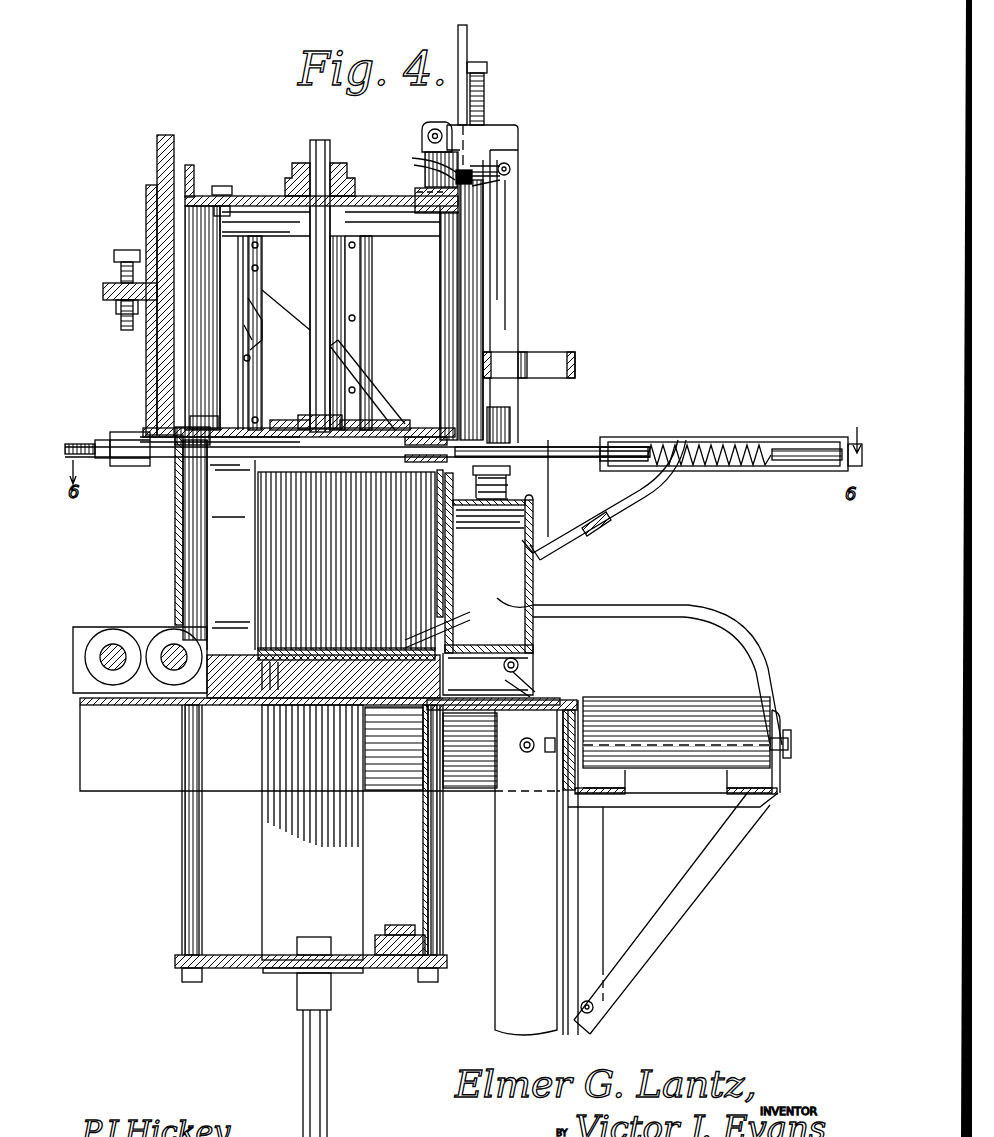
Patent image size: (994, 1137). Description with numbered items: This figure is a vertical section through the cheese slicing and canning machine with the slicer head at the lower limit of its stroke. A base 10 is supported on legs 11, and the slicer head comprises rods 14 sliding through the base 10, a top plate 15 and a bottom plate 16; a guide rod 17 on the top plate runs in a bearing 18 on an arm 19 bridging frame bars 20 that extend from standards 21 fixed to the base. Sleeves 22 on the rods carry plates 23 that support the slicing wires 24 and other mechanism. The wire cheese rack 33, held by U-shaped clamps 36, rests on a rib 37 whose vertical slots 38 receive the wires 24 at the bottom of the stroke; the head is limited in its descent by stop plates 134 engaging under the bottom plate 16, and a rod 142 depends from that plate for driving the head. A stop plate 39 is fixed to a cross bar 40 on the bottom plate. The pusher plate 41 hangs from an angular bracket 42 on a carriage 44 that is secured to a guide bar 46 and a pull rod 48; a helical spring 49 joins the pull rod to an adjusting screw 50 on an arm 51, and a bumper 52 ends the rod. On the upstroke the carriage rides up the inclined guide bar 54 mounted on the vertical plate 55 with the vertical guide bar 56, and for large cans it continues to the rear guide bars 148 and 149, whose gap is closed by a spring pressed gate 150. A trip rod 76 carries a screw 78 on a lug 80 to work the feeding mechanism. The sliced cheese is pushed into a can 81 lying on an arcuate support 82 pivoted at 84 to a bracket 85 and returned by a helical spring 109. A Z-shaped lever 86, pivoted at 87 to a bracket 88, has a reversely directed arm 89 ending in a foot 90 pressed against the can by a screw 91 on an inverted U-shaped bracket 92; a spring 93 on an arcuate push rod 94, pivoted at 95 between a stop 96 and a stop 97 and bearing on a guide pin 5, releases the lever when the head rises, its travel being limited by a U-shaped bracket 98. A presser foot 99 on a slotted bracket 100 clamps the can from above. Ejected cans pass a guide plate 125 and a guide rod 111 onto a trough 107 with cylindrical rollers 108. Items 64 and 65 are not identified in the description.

The guide pin 5 is at (411, 141).
The base 10 is at (110, 706).
The legs 11 is at (500, 995).
The rods 14 is at (186, 826).
The top plate 15 is at (227, 428).
The bottom plate 16 is at (236, 955).
The guide rod 17 is at (321, 140).
The bearing 18 is at (305, 170).
The arm 19 is at (256, 196).
The frame bars 20 is at (195, 180).
The standards 21 is at (195, 248).
The sleeves 22 is at (200, 573).
The plates 23 is at (178, 543).
The slicing wires 24 is at (425, 640).
The wire cheese rack 33 is at (262, 550).
The U-shaped clamps 36 is at (248, 462).
The rib 37 is at (222, 688).
The vertical slots 38 is at (265, 655).
The stop plate 39 is at (423, 822).
The cross bar 40 is at (385, 958).
The pusher plate 41 is at (453, 560).
The angular bracket 42 is at (422, 446).
The carriage 44 is at (386, 438).
The guide bar 46 is at (200, 455).
The pull rod 48 is at (82, 440).
The helical spring 49 is at (722, 442).
The adjusting screw 50 is at (818, 462).
The arm 51 is at (810, 440).
The bumper 52 is at (127, 434).
The inclined guide bar 54 is at (374, 392).
The vertical plate 55 is at (388, 262).
The vertically disposed guide bar 56 is at (348, 300).
The block 64 is at (80, 640).
The rollers 65 is at (168, 645).
The trip rod 76 is at (157, 358).
The screw 78 is at (121, 266).
The lug 80 is at (115, 312).
The can 81 is at (505, 602).
The arcuate support 82 is at (480, 653).
The pivot 84 is at (520, 665).
The bracket 85 is at (540, 705).
The Z-shaped lever 86 is at (512, 304).
The pivot 87 is at (430, 132).
The bracket 88 is at (436, 152).
The reversely directed arm 89 is at (662, 488).
The foot 90 is at (536, 575).
The screw 91 is at (488, 104).
The inverted U-shaped bracket 92 is at (480, 222).
The spring 93 is at (490, 190).
The arcuate push rod 94 is at (428, 168).
The pivot 95 is at (490, 170).
The stop 96 is at (510, 174).
The stop 97 is at (460, 150).
The U-shaped bracket 98 is at (578, 360).
The presser foot 99 is at (508, 494).
The slotted bracket 100 is at (480, 476).
The trough 107 is at (782, 772).
The cylindrical rollers 108 is at (690, 710).
The helical spring 109 is at (518, 682).
The guide rod 111 is at (698, 606).
The guide plate 125 is at (605, 520).
The stop plates 134 is at (285, 852).
The rod 142 is at (328, 1070).
The vertically disposed guide bar 148 is at (262, 284).
The vertically disposed guide bar 149 is at (252, 388).
The spring pressed gate 150 is at (250, 338).